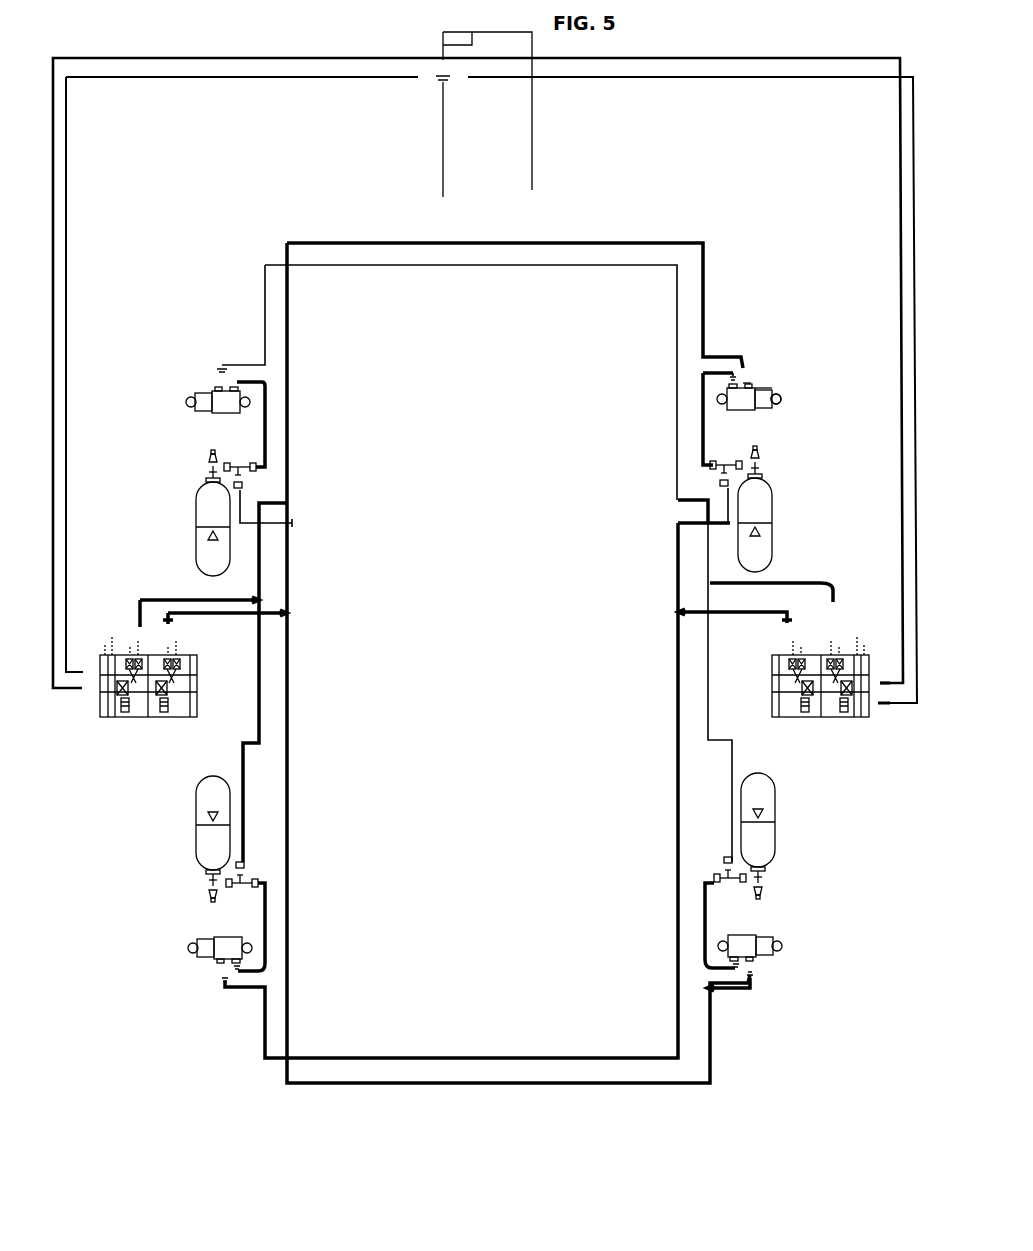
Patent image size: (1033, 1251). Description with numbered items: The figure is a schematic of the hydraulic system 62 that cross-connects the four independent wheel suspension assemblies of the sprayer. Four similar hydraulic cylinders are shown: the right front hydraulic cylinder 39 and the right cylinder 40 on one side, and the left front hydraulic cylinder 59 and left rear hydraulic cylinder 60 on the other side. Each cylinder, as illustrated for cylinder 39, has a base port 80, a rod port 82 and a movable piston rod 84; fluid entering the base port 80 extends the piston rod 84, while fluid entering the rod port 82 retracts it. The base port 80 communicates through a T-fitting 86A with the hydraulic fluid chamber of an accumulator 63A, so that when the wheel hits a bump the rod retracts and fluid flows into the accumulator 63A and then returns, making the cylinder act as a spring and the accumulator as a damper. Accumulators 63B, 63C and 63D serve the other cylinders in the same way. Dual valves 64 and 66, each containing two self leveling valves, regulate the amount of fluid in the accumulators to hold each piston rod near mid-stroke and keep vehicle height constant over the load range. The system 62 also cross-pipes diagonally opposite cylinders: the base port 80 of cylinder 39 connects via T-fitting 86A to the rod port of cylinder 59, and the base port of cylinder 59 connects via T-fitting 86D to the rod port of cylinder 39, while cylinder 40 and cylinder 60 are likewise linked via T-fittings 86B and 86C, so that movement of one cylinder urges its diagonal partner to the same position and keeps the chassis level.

The hydraulic system 62 is at (193, 1063).
The hydraulic cylinder 60 is at (203, 386).
The accumulator 63B is at (195, 512).
The T-fitting 86B is at (274, 486).
The base port 80 is at (737, 390).
The rod port 82 is at (745, 368).
The piston rod 84 is at (782, 393).
The hydraulic cylinder 39 is at (769, 405).
The T-fitting 86A is at (696, 487).
The accumulator 63A is at (775, 511).
The dual valve 66 is at (135, 718).
The dual valve 64 is at (830, 720).
The accumulator 63D is at (195, 836).
The T-fitting 86D is at (268, 871).
The hydraulic cylinder 59 is at (203, 937).
The accumulator 63C is at (778, 840).
The T-fitting 86C is at (702, 869).
The hydraulic cylinder 40 is at (757, 935).